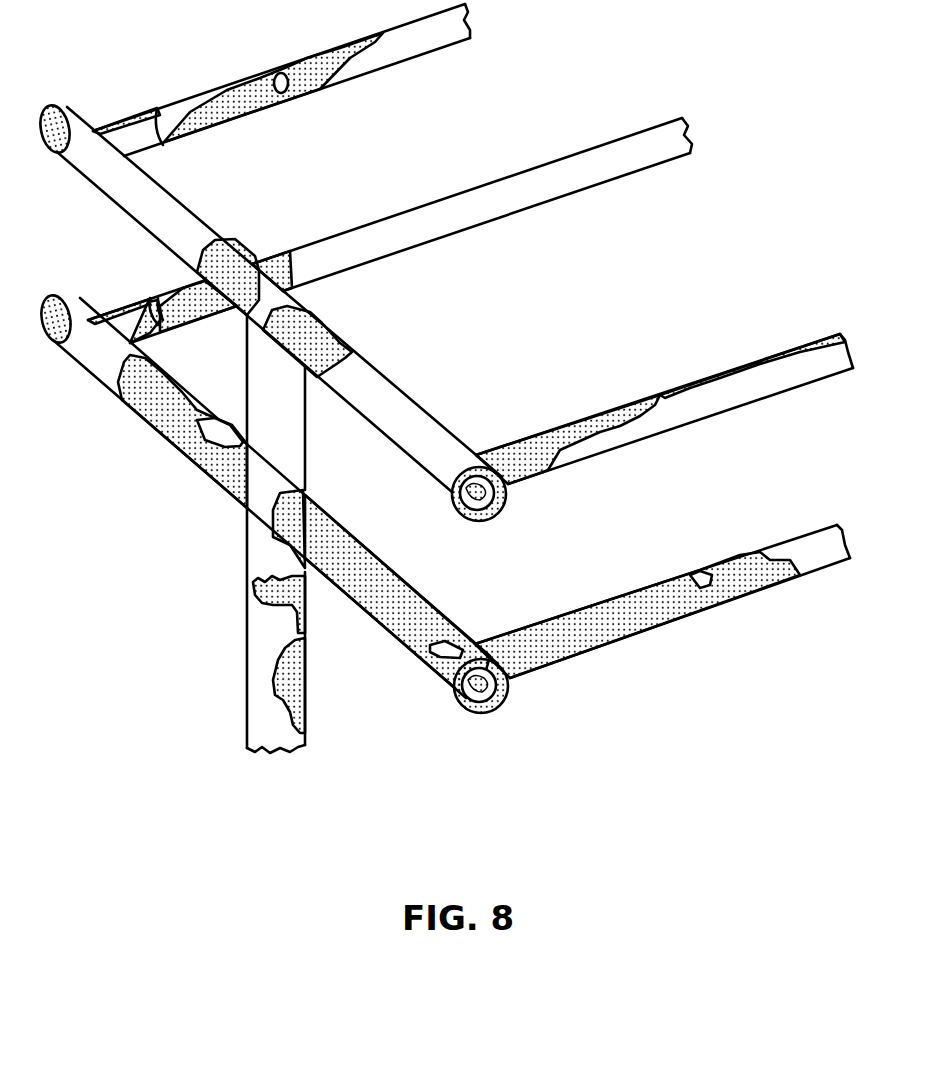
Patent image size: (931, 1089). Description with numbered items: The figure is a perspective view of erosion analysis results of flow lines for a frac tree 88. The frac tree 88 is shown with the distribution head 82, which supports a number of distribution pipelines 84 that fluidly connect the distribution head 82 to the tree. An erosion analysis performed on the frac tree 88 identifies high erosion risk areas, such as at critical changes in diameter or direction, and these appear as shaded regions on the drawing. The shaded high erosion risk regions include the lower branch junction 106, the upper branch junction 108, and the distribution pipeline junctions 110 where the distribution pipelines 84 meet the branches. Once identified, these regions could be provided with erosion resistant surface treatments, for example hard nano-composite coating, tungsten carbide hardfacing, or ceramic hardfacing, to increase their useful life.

The distribution head 82 is at (305, 610).
The distribution pipelines 84 is at (686, 360).
The frac tree 88 is at (444, 378).
The lower branch junction 106 is at (218, 500).
The upper branch junction 108 is at (345, 309).
The distribution pipeline junctions 110 is at (532, 492).